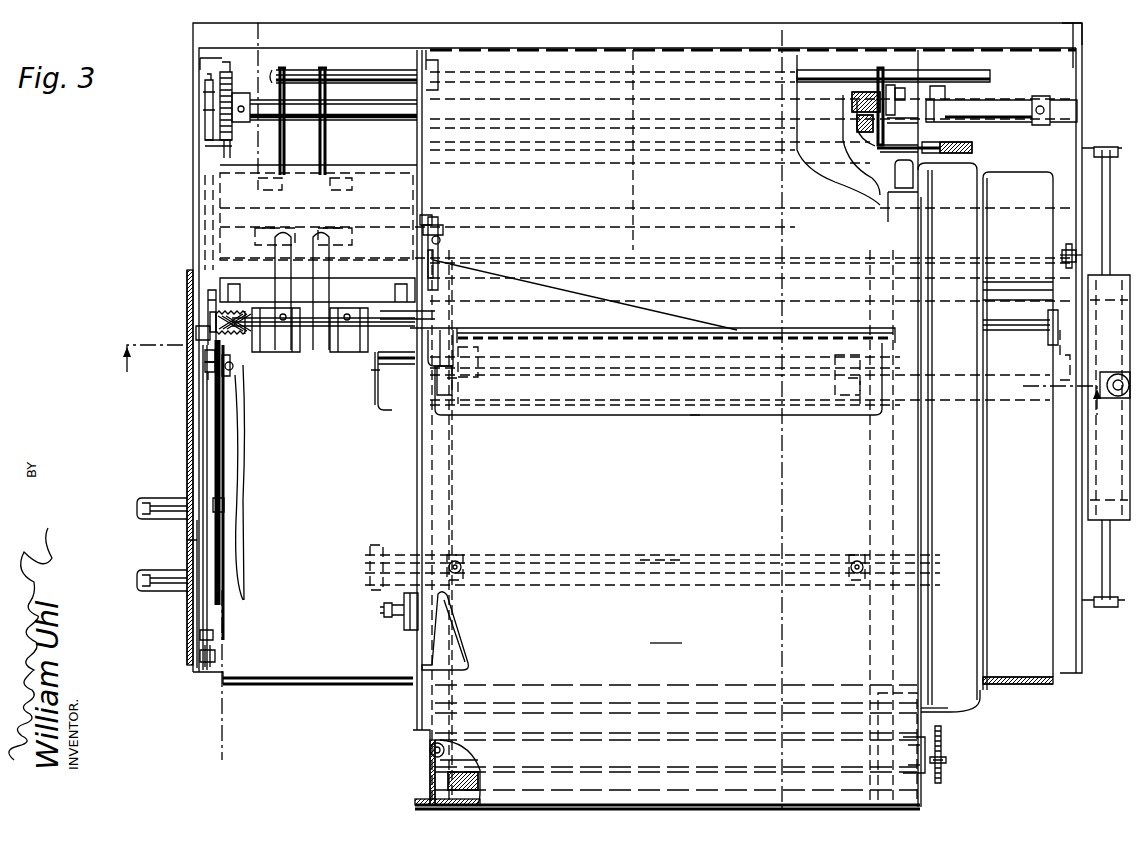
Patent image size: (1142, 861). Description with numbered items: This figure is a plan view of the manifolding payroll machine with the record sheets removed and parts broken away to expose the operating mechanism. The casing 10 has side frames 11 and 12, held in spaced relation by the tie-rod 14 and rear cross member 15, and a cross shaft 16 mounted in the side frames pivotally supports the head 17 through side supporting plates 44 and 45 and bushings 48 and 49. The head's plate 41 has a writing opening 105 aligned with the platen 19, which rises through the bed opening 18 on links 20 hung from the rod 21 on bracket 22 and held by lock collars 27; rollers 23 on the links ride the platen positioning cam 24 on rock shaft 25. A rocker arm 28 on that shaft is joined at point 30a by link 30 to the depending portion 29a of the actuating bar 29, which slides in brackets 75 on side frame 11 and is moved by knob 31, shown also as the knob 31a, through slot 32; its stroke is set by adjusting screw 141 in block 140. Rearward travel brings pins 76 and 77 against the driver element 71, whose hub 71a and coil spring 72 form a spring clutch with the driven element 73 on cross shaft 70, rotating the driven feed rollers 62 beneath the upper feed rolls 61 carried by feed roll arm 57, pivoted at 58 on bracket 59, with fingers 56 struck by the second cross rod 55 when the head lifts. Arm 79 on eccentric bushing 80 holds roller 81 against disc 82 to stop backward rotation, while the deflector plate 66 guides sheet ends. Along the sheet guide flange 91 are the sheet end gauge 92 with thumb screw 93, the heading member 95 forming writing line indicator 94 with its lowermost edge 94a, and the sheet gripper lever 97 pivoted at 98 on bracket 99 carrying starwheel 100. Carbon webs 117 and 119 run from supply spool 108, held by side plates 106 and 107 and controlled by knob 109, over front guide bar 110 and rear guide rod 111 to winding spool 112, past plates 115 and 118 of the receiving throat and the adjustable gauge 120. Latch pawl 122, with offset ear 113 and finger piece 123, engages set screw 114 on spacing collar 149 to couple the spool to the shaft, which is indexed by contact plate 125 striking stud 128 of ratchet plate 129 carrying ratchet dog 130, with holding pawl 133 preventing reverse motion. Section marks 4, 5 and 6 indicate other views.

The section line 4- 4 is at (780, 37).
The section line 5- 5 is at (611, 390).
The section line 6- 6 is at (262, 37).
The casing 10 is at (331, 684).
The side frame 11 is at (193, 79).
The side frame 12 is at (1083, 75).
The tie-rod 14 is at (735, 214).
The rear cross member 15 is at (1066, 32).
The cross shaft 16 is at (1012, 99).
The head 17 is at (922, 646).
The opening 18 is at (382, 393).
The platen 19 is at (612, 417).
The link 20 is at (453, 481).
The rod 21 is at (658, 560).
The bracket 22 is at (374, 556).
The roller 23 is at (462, 383).
The platen positioning cam 24 is at (457, 393).
The rock shaft 25 is at (383, 367).
The lock collar 27 is at (461, 561).
The rocker arm 28 is at (231, 367).
The actuating bar 29 is at (207, 428).
The downwardly depending portion 29a is at (225, 505).
The link 30 is at (221, 465).
The connection point 30a is at (231, 370).
The knob 31 is at (145, 590).
The handle 31a is at (145, 504).
The elongated slot 32 is at (188, 548).
The plate 41 is at (666, 635).
The side supporting plate 44 is at (906, 78).
The side supporting plate 45 is at (443, 62).
The bushing 48 is at (425, 102).
The bushing 49 is at (945, 98).
The second cross rod 55 is at (358, 72).
The projecting finger 56 is at (323, 68).
The feed roll arm 57 is at (277, 285).
The pivot 58 is at (335, 240).
The bracket 59 is at (347, 200).
The upper feed roll 61 is at (340, 358).
The driven feed roller 62 is at (212, 298).
The plate 66 is at (317, 290).
The cross shaft 70 is at (433, 315).
The driver element 71 is at (210, 292).
The cylindrical hub 71a is at (212, 318).
The coil spring 72 is at (214, 337).
The driven element 73 is at (206, 354).
The bracket 75 is at (193, 208).
The pin 76 is at (196, 335).
The pin 77 is at (207, 368).
The arm 79 is at (1050, 292).
The eccentric bushing 80 is at (1071, 260).
The roller 81 is at (1047, 339).
The disc 82 is at (1062, 343).
The sheet guide flange 91 is at (416, 485).
The sheet end gauge 92 is at (469, 661).
The thumb screw 93 is at (381, 615).
The writing line indicator 94 is at (437, 368).
The lowermost edge 94a is at (437, 393).
The heading member 95 is at (746, 337).
The sheet gripper lever 97 is at (424, 218).
The pivot 98 is at (442, 240).
The bracket 99 is at (434, 279).
The starwheel 100 is at (439, 223).
The opening 105 is at (694, 417).
The side plate 106 is at (924, 798).
The side plate 107 is at (430, 782).
The supply spool 108 is at (431, 770).
The knob 109 is at (944, 777).
The front guide bar 110 is at (948, 714).
The rear guide rod 111 is at (972, 148).
The winding spool 112 is at (886, 86).
The offset ear 113 is at (892, 84).
The set screw 114 is at (902, 90).
The plate 115 is at (933, 512).
The upper carbon web 117 is at (856, 178).
The second plate 118 is at (978, 484).
The lower carbon web 119 is at (914, 174).
The adjustable gauge 120 is at (1092, 496).
The latch pawl 122 is at (885, 110).
The finger piece 123 is at (920, 140).
The contact plate 125 is at (210, 103).
The stud 128 is at (213, 97).
The ratchet plate 129 is at (230, 70).
The ratchet dog 130 is at (226, 73).
The holding pawl 133 is at (233, 148).
The block 140 is at (216, 657).
The adjusting screw 141 is at (214, 634).
The spacing collar 149 is at (920, 132).